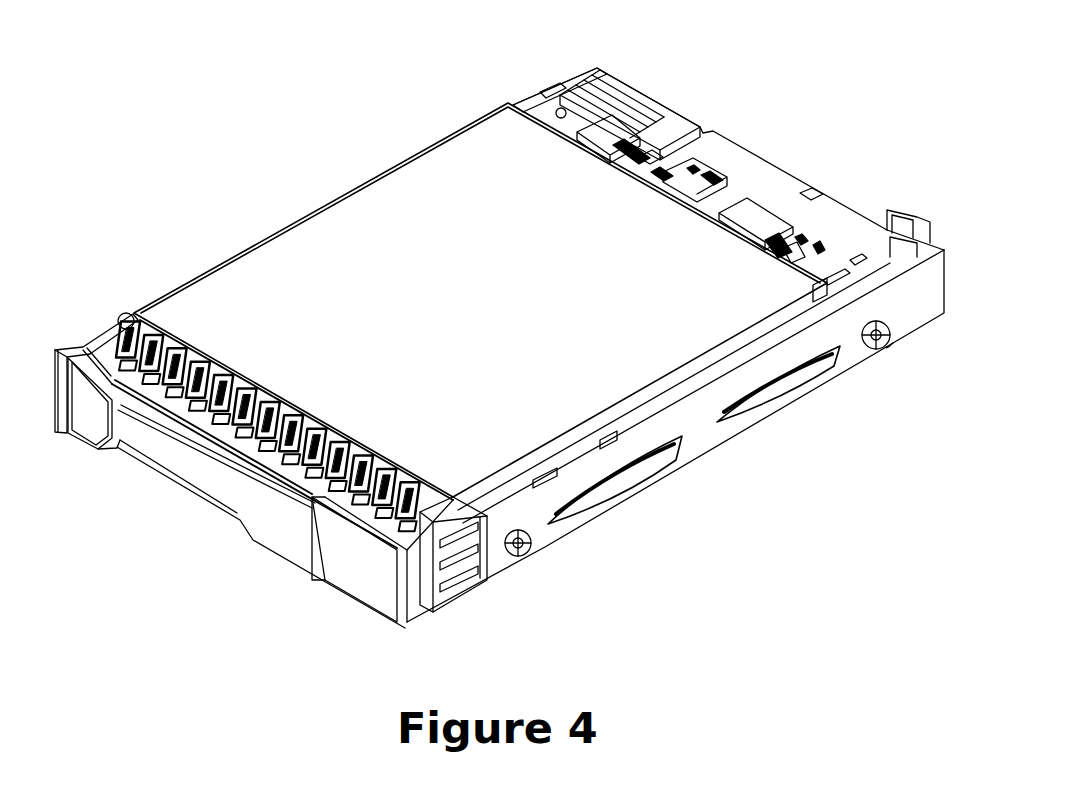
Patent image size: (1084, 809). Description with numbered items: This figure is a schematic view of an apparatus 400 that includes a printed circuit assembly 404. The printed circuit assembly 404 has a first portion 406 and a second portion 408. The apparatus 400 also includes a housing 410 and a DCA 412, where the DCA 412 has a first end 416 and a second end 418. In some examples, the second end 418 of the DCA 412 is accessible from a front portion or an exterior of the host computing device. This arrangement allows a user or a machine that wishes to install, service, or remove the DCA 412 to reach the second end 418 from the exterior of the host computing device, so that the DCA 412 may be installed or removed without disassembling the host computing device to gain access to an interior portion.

The apparatus 400 is at (302, 94).
The printed circuit assembly 404 is at (660, 105).
The first portion 406 is at (562, 118).
The second portion 408 is at (733, 148).
The housing 410 is at (226, 308).
The DCA 412 is at (683, 417).
The first end of the DCA 416 is at (848, 208).
The second end of the DCA 418 is at (183, 468).